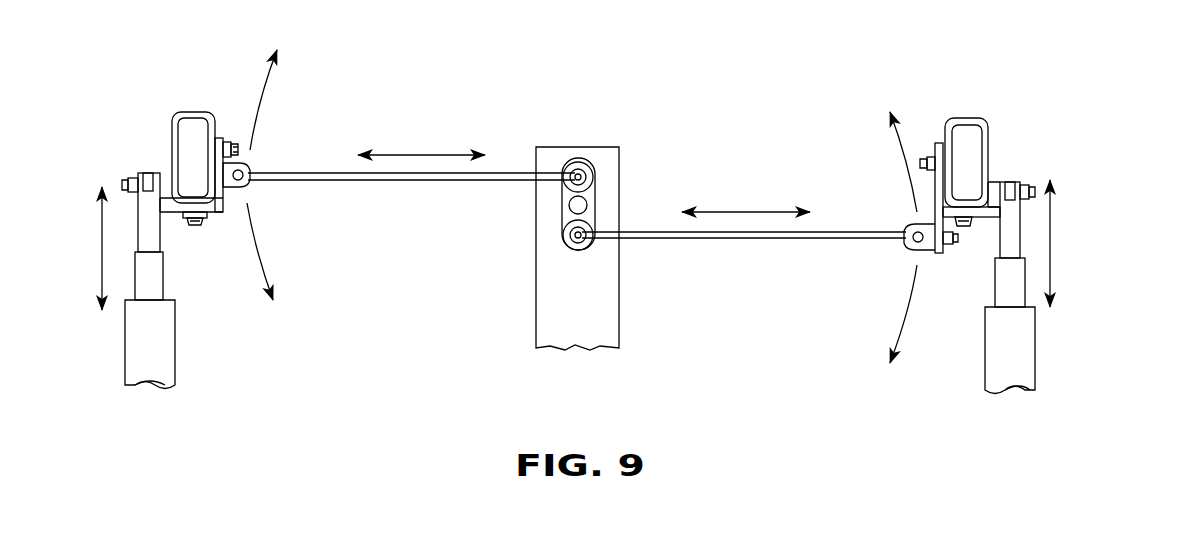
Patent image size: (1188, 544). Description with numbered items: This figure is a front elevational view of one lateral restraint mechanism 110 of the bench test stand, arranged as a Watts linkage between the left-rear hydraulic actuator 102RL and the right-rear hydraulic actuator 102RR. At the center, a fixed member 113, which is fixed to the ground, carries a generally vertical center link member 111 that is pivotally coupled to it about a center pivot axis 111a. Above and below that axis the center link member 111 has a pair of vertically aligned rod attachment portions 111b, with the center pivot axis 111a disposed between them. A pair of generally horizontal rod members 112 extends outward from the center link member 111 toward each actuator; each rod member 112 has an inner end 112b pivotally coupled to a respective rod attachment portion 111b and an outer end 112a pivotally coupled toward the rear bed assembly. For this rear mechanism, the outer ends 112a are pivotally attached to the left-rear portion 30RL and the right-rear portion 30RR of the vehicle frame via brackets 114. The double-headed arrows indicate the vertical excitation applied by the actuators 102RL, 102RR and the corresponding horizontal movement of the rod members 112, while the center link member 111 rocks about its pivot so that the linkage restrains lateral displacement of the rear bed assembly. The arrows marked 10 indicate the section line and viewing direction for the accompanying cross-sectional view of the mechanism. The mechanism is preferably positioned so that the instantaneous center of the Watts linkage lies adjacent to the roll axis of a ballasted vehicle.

The lateral restraint mechanism 110 is at (716, 103).
The left-rear portion of the vehicle frame 30RL is at (190, 112).
The right-rear portion of the vehicle frame 30RR is at (972, 118).
The bracket 114 is at (212, 213).
The left-rear hydraulic actuator 102RL is at (190, 347).
The right-rear hydraulic actuator 102RR is at (1050, 355).
The outer end of rod member 112a is at (246, 166).
The rod member 112 is at (392, 182).
The inner end of rod member 112b is at (578, 174).
The fixed member 113 is at (598, 309).
The center link member 111 is at (557, 205).
The center pivot axis 111a is at (584, 205).
The rod attachment portion 111b is at (594, 175).
The rear bed 10 is at (580, 123).